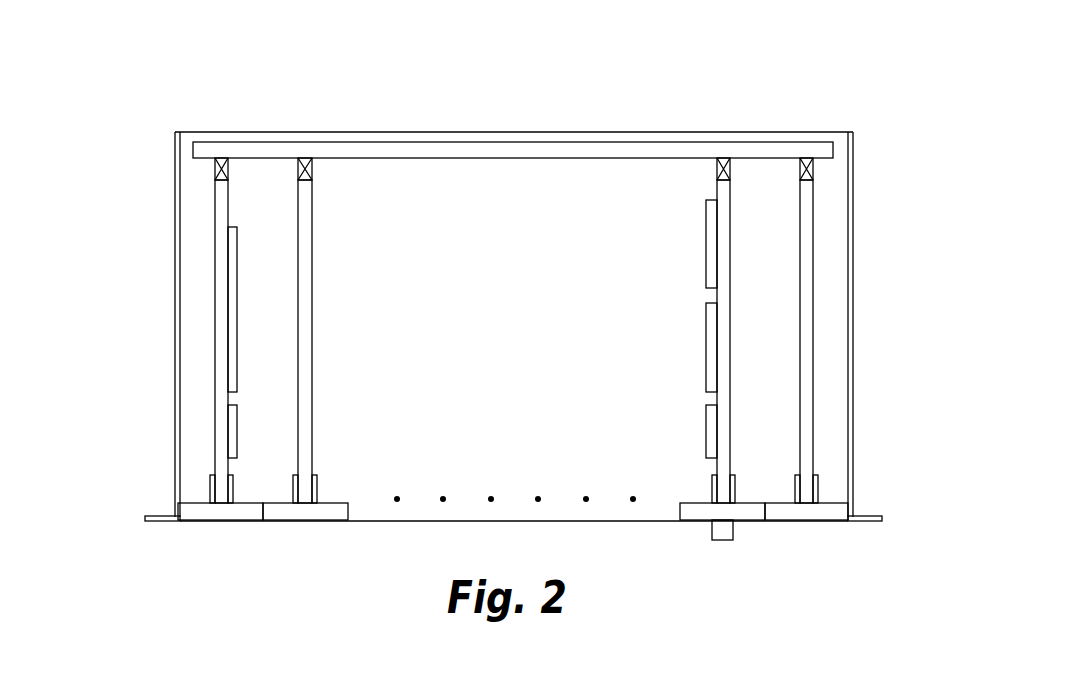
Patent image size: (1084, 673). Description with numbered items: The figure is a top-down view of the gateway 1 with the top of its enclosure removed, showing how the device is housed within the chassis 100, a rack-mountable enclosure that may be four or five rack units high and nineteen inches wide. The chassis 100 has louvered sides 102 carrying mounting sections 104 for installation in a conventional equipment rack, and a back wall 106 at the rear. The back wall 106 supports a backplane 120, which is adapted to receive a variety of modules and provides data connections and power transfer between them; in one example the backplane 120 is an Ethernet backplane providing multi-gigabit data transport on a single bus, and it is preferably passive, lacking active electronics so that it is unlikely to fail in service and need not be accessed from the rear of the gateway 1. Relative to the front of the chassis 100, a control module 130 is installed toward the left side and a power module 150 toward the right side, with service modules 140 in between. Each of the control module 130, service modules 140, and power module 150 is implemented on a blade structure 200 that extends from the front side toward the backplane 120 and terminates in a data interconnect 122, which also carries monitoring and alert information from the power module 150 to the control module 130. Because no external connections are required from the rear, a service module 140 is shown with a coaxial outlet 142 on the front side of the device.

The gateway 1 is at (736, 76).
The chassis 100 is at (175, 190).
The louvered sides 102 is at (175, 248).
The mounting sections 104 is at (167, 522).
The back wall 106 is at (362, 133).
The backplane 120 is at (652, 147).
The interconnects 122 is at (306, 162).
The control module 130 is at (218, 510).
The service modules 140 is at (322, 510).
The coaxial outlet 142 is at (720, 537).
The power module 150 is at (806, 510).
The blade structure 200 is at (229, 197).